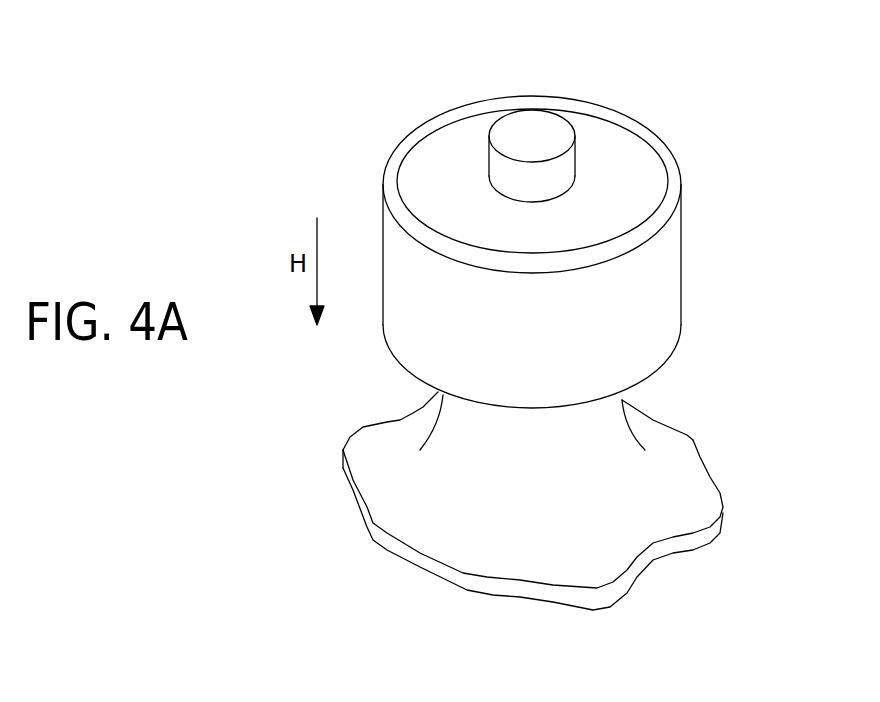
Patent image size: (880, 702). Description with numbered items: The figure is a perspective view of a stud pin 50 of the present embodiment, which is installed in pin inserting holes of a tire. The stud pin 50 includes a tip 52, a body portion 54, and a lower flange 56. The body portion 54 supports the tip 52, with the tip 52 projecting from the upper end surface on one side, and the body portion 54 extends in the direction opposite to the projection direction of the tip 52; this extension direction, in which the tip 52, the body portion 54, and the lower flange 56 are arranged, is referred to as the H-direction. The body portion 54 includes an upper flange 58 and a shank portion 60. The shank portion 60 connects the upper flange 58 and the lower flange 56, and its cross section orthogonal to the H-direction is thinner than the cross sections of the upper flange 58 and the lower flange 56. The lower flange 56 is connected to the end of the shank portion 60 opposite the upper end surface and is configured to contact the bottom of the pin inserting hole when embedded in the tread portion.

The stud pin 50 is at (624, 75).
The tip 52 is at (537, 103).
The body portion 54 is at (699, 292).
The lower flange 56 is at (662, 502).
The upper flange 58 is at (655, 262).
The shank portion 60 is at (625, 432).